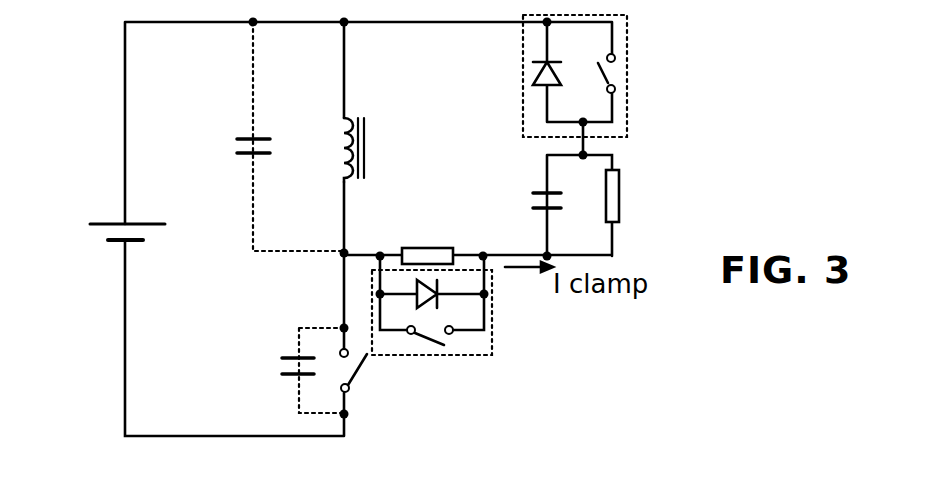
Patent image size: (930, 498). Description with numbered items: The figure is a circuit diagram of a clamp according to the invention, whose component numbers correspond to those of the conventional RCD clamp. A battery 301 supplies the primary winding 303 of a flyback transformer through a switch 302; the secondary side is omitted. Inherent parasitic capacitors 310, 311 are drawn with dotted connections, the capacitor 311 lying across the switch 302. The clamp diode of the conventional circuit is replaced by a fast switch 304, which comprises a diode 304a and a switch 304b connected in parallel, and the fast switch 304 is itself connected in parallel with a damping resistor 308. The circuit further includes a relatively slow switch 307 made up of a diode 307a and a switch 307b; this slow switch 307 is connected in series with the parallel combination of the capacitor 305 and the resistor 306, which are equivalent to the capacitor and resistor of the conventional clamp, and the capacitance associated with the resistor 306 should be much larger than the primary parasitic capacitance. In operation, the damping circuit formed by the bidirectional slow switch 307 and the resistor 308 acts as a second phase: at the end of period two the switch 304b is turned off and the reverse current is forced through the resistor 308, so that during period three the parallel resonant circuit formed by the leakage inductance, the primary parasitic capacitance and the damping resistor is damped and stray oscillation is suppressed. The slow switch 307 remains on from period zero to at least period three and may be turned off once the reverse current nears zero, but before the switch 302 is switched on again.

The battery 301 is at (108, 232).
The switch 302 is at (356, 378).
The primary winding 303 is at (342, 145).
The fast switch 304 is at (547, 346).
The diode 304a is at (444, 306).
The switch 304b is at (437, 350).
The capacitor 305 is at (530, 200).
The resistor 306 is at (620, 188).
The slow switch 307 is at (658, 72).
The diode 307a is at (532, 72).
The switch 307b is at (622, 78).
The damping resistor 308 is at (434, 248).
The parasitic capacitor 310 is at (237, 146).
The parasitic capacitor 311 is at (312, 338).